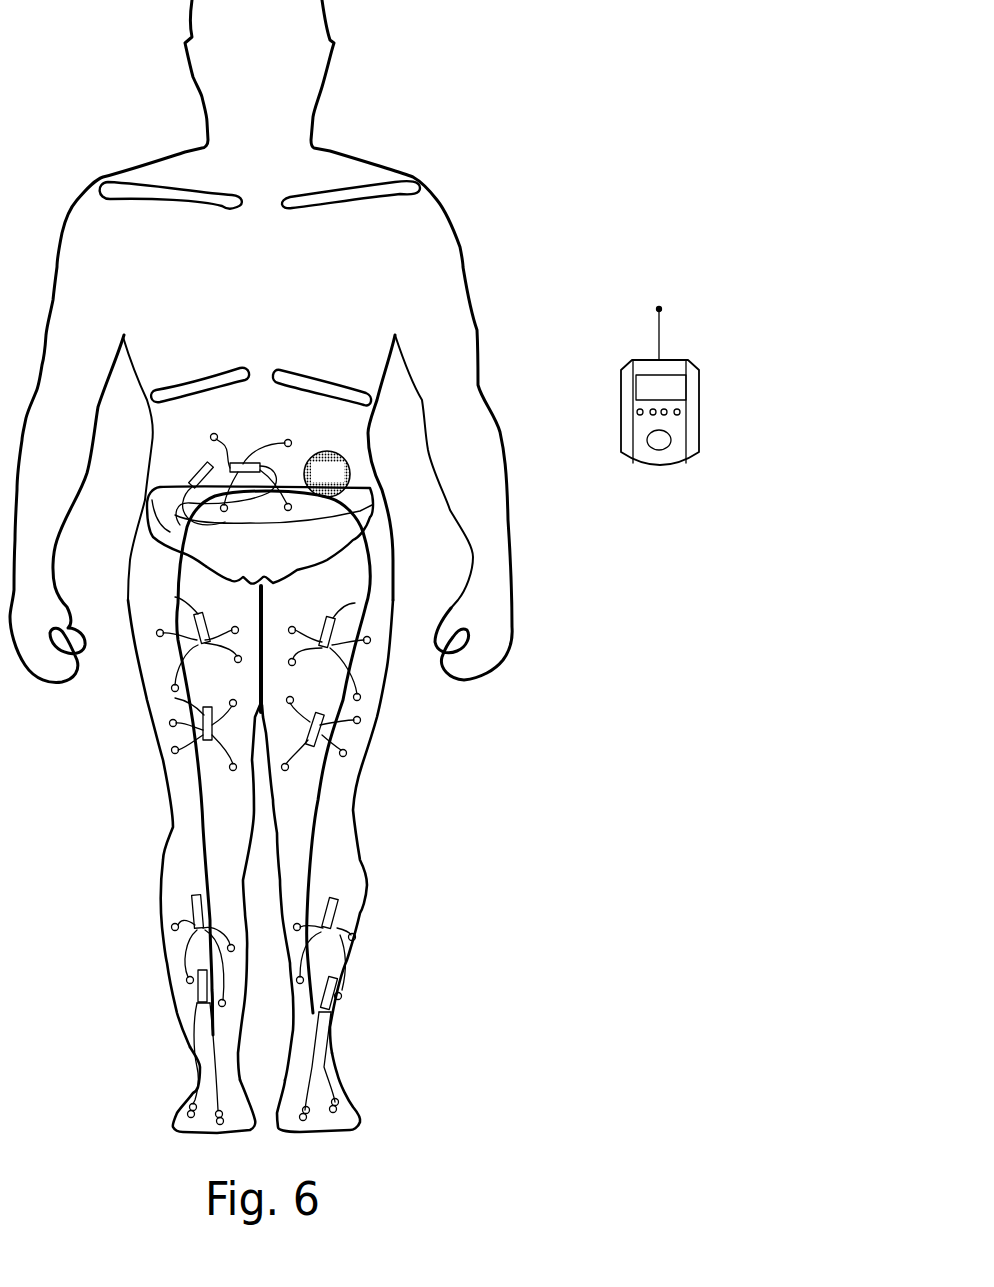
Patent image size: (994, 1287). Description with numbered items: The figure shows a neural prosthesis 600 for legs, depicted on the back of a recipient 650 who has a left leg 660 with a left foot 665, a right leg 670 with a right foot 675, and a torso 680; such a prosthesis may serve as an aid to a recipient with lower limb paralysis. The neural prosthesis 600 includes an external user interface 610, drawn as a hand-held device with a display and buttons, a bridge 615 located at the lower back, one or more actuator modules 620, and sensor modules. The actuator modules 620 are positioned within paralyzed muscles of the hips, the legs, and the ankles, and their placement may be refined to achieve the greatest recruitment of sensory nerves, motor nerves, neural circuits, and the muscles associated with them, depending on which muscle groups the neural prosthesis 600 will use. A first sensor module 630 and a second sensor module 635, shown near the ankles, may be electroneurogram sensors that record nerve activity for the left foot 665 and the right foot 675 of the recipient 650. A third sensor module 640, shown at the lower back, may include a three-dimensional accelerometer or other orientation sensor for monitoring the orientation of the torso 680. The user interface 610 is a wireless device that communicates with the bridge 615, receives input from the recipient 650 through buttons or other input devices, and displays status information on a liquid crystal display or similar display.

The neural prosthesis 600 is at (257, 405).
The external user interface 610 is at (698, 378).
The bridge 615 is at (613, 363).
The actuator modules 620 is at (258, 464).
The first sensor module 630 is at (338, 1008).
The second sensor module 635 is at (199, 988).
The third sensor module 640 is at (198, 478).
The recipient 650 is at (389, 141).
The left leg 660 is at (380, 708).
The left foot 665 is at (358, 1120).
The right leg 670 is at (152, 722).
The right foot 675 is at (178, 1125).
The torso 680 is at (146, 398).